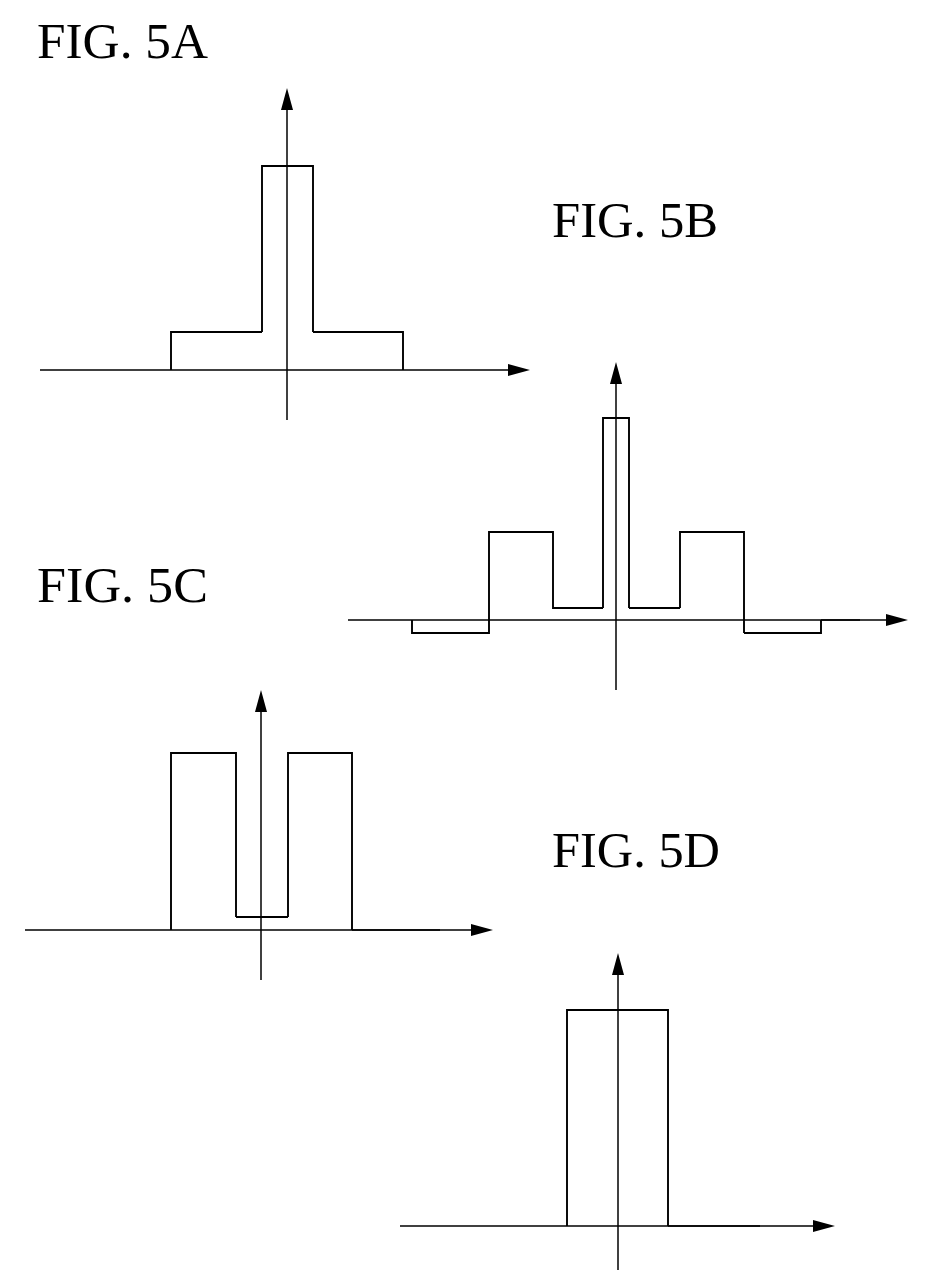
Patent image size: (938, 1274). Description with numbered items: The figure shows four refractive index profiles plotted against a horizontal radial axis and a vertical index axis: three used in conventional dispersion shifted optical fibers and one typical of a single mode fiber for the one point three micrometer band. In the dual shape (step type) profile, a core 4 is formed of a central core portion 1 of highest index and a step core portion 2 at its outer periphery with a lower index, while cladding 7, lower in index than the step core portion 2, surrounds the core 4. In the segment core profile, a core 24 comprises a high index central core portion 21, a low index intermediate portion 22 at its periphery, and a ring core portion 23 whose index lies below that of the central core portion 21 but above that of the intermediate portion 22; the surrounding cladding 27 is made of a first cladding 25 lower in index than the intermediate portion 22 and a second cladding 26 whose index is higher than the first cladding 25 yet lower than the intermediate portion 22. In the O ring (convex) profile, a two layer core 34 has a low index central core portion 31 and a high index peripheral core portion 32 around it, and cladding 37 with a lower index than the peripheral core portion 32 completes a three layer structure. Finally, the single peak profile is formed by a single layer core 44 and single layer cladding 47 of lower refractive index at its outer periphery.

In FIG. 5A, the central core portion 1 is at (270, 223).
In FIG. 5A, the step core portion 2 is at (212, 332).
In FIG. 5A, the core 4 is at (285, 236).
In FIG. 5A, the cladding 7 is at (147, 369).
In FIG. 5B, the central core portion 21 is at (627, 413).
In FIG. 5B, the intermediate portion 22 is at (652, 608).
In FIG. 5B, the ring core portion 23 is at (720, 531).
In FIG. 5B, the core 24 is at (690, 492).
In FIG. 5B, the first cladding 25 is at (783, 633).
In FIG. 5B, the second cladding 26 is at (833, 590).
In FIG. 5B, the cladding 27 is at (803, 572).
In FIG. 5C, the central core portion 31 is at (268, 917).
In FIG. 5C, the peripheral core portion 32 is at (283, 700).
In FIG. 5C, the core 34 is at (315, 787).
In FIG. 5C, the cladding 37 is at (378, 928).
In FIG. 5D, the core 44 is at (643, 1008).
In FIG. 5D, the cladding 47 is at (712, 1225).